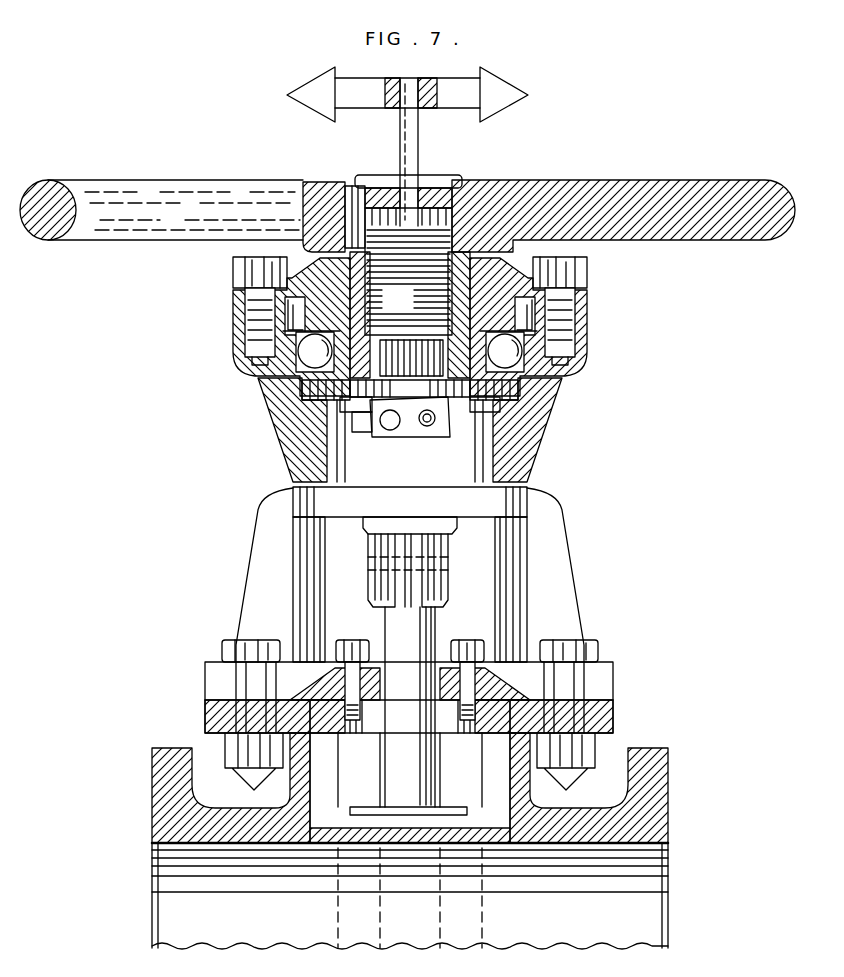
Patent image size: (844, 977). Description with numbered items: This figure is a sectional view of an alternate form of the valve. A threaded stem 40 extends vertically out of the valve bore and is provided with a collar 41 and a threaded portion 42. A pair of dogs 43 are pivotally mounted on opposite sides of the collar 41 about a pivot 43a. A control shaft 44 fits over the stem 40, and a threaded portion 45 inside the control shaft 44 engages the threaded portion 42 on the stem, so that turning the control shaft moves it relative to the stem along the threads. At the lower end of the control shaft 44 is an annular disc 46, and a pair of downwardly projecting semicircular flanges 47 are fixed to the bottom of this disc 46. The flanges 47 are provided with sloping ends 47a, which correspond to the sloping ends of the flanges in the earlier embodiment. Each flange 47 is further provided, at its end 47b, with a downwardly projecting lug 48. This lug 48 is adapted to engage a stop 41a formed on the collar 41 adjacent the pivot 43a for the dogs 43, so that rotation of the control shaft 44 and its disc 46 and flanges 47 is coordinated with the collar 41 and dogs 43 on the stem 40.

The threaded stem 40 is at (443, 584).
The collar 41 is at (322, 437).
The stop 41a is at (345, 428).
The threaded portion 42 is at (386, 322).
The dogs 43 is at (485, 433).
The pivot 43a is at (390, 427).
The control shaft 44 is at (458, 215).
The threaded portion 45 is at (533, 312).
The annular disc 46 is at (400, 392).
The semicircular flanges 47 is at (470, 402).
The sloping ends 47a is at (485, 412).
The flange end 47b is at (375, 398).
The lug 48 is at (357, 412).